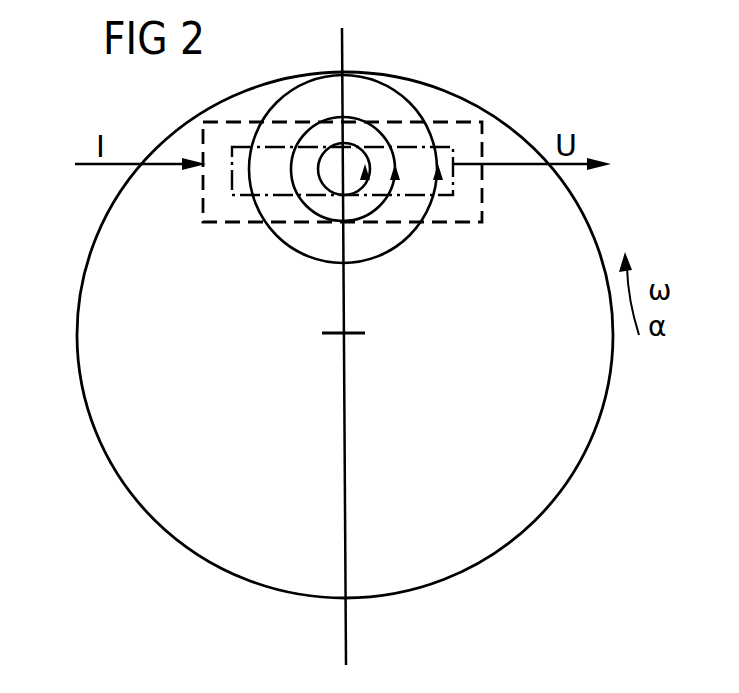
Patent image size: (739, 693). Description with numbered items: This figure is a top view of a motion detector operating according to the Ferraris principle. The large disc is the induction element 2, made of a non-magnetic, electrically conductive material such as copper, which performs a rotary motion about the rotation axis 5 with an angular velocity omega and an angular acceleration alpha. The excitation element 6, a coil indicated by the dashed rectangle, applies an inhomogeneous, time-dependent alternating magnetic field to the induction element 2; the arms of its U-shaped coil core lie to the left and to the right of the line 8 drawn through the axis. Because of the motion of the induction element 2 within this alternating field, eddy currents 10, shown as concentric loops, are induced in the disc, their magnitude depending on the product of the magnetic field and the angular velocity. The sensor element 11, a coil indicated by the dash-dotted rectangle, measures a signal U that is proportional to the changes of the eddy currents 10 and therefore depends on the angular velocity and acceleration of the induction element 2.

The induction element 2 is at (77, 360).
The rotation axis 5 is at (352, 336).
The excitation element 6 is at (457, 222).
The line 8 is at (348, 48).
The eddy currents 10 is at (363, 190).
The sensor element 11 is at (240, 195).